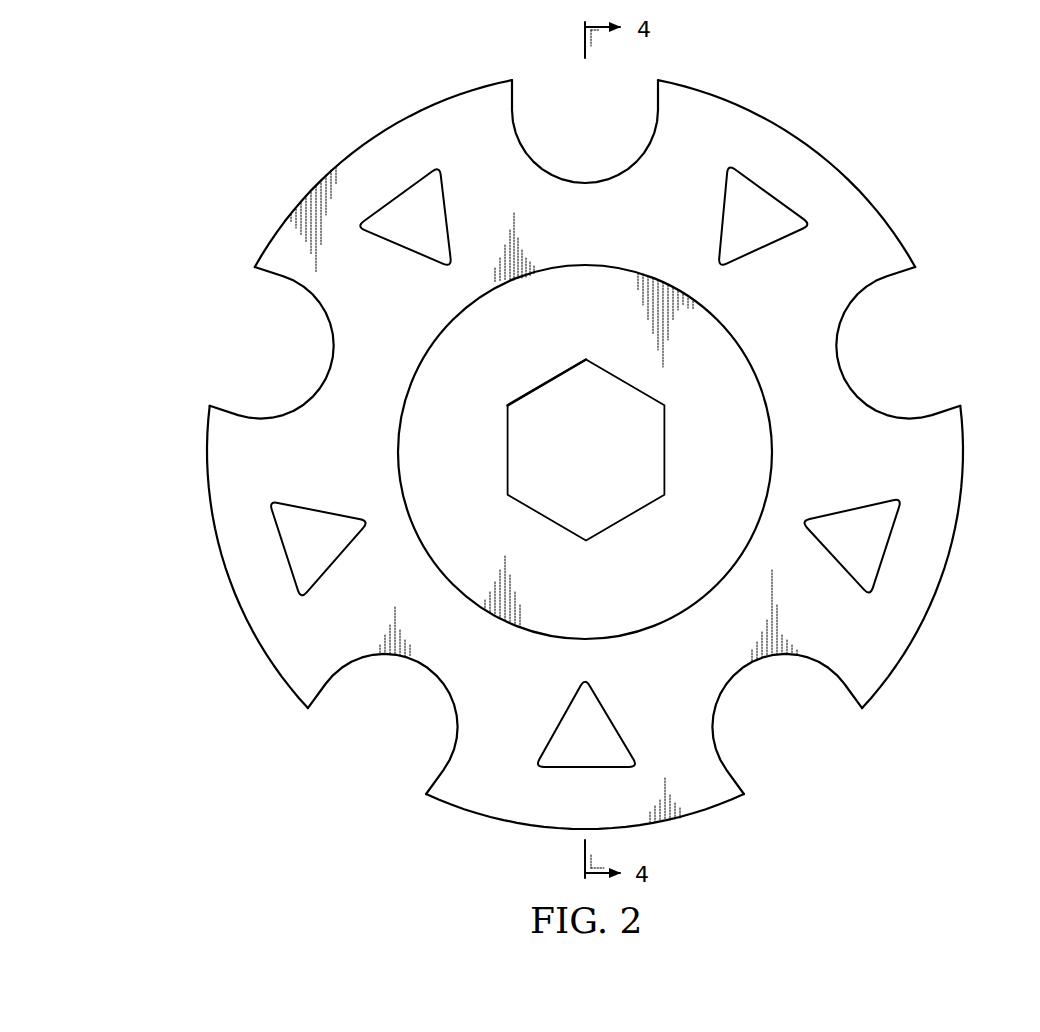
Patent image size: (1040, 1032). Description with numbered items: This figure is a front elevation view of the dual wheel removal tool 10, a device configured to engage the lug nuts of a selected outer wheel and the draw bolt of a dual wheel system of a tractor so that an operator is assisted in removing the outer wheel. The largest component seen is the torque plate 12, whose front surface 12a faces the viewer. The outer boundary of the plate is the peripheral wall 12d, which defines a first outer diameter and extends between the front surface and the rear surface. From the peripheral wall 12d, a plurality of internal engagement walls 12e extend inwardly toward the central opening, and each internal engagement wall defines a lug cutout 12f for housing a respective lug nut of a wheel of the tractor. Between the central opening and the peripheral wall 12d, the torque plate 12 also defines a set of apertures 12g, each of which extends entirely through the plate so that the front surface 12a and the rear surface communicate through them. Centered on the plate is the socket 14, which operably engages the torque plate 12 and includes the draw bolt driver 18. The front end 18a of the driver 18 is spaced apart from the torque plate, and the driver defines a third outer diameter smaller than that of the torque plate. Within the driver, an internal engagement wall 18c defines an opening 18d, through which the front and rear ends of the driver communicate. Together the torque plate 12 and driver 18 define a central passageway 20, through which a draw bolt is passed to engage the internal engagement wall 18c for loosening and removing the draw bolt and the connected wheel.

The dual wheel removal tool 10 is at (254, 82).
The torque plate 12 is at (838, 125).
The front surface 12a is at (605, 232).
The peripheral wall 12d is at (462, 97).
The internal engagement walls 12e is at (517, 77).
The lug cutout 12f is at (632, 74).
The apertures 12g is at (400, 252).
The socket 14 is at (532, 452).
The draw bolt driver 18 is at (388, 447).
The front end 18a is at (739, 461).
The internal engagement wall 18c is at (630, 525).
The opening 18d is at (534, 373).
The central passageway 20 is at (546, 412).